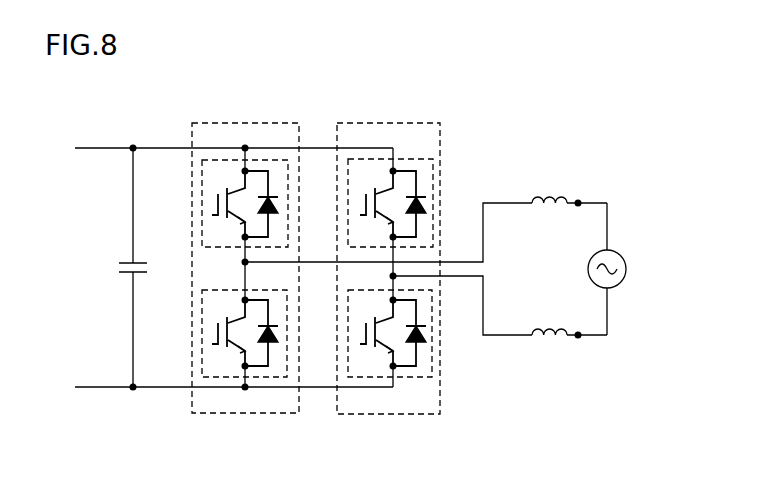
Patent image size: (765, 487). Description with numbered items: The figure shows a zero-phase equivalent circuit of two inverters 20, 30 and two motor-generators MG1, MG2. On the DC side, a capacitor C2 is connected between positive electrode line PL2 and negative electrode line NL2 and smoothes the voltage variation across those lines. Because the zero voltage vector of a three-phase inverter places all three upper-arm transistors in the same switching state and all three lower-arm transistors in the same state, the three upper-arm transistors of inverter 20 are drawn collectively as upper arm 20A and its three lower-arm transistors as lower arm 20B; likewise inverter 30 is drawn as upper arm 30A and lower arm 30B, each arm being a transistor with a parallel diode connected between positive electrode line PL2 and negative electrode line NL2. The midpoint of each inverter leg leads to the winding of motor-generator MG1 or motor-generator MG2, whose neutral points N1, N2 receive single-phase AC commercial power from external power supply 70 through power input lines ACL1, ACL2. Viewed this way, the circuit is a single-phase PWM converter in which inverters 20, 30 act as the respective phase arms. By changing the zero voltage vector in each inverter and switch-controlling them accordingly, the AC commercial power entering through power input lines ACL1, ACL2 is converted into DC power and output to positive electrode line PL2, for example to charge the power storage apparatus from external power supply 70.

The positive electrode line PL2 is at (101, 145).
The negative electrode line NL2 is at (100, 390).
The capacitor C2 is at (137, 262).
The inverter 20 is at (218, 122).
The upper arm 20A is at (271, 159).
The lower arm 20B is at (223, 377).
The inverter 30 is at (364, 122).
The upper arm 30A is at (416, 158).
The lower arm 30B is at (408, 377).
The motor-generator MG1 is at (565, 170).
The motor-generator MG2 is at (564, 360).
The neutral point N1 is at (579, 202).
The neutral point N2 is at (579, 336).
The power input line ACL1 is at (608, 222).
The power input line ACL2 is at (608, 320).
The external power supply 70 is at (626, 270).